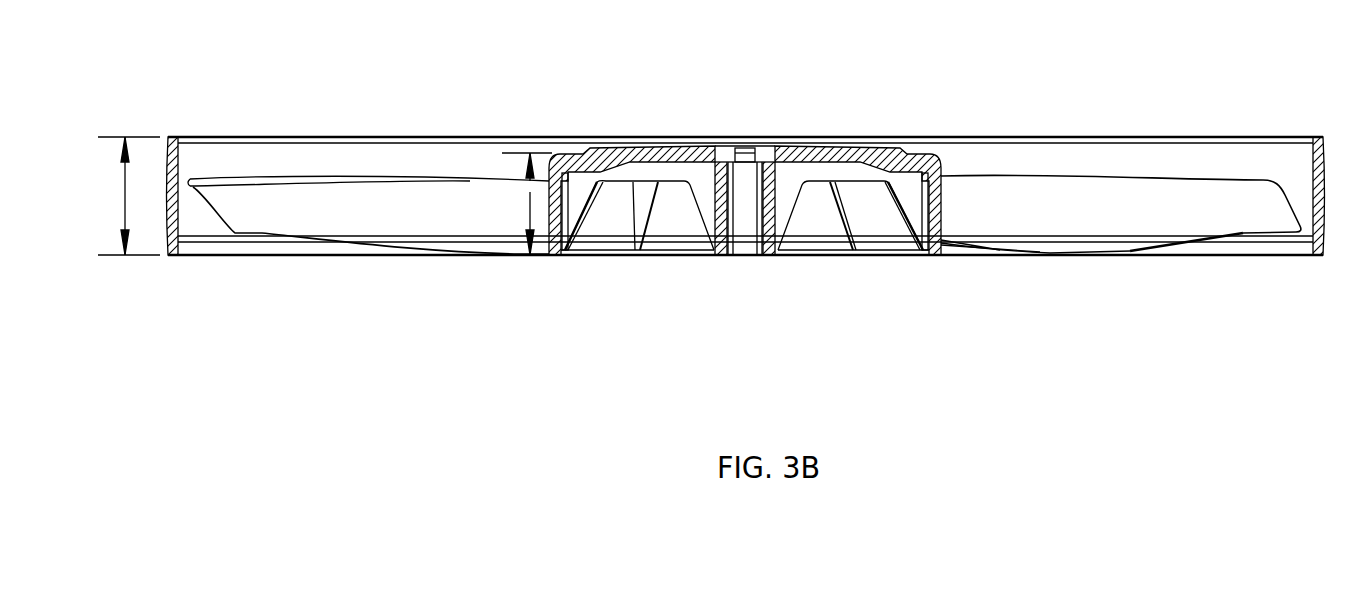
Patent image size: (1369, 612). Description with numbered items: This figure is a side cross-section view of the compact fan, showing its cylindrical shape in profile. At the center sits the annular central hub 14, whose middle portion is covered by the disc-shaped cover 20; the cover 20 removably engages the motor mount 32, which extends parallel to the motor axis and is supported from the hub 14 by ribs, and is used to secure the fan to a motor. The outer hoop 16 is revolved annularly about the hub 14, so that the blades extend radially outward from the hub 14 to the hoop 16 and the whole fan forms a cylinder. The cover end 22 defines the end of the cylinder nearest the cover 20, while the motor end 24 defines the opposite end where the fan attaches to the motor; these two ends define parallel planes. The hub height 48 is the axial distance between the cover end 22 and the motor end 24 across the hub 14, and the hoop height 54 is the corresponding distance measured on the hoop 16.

The central hub 14 is at (937, 210).
The outer hoop 16 is at (245, 214).
The cover 20 is at (692, 152).
The cover end 22 is at (625, 137).
The motor end 24 is at (770, 258).
The motor mount 32 is at (720, 228).
The hub height 48 is at (521, 203).
The hoop height 54 is at (125, 205).